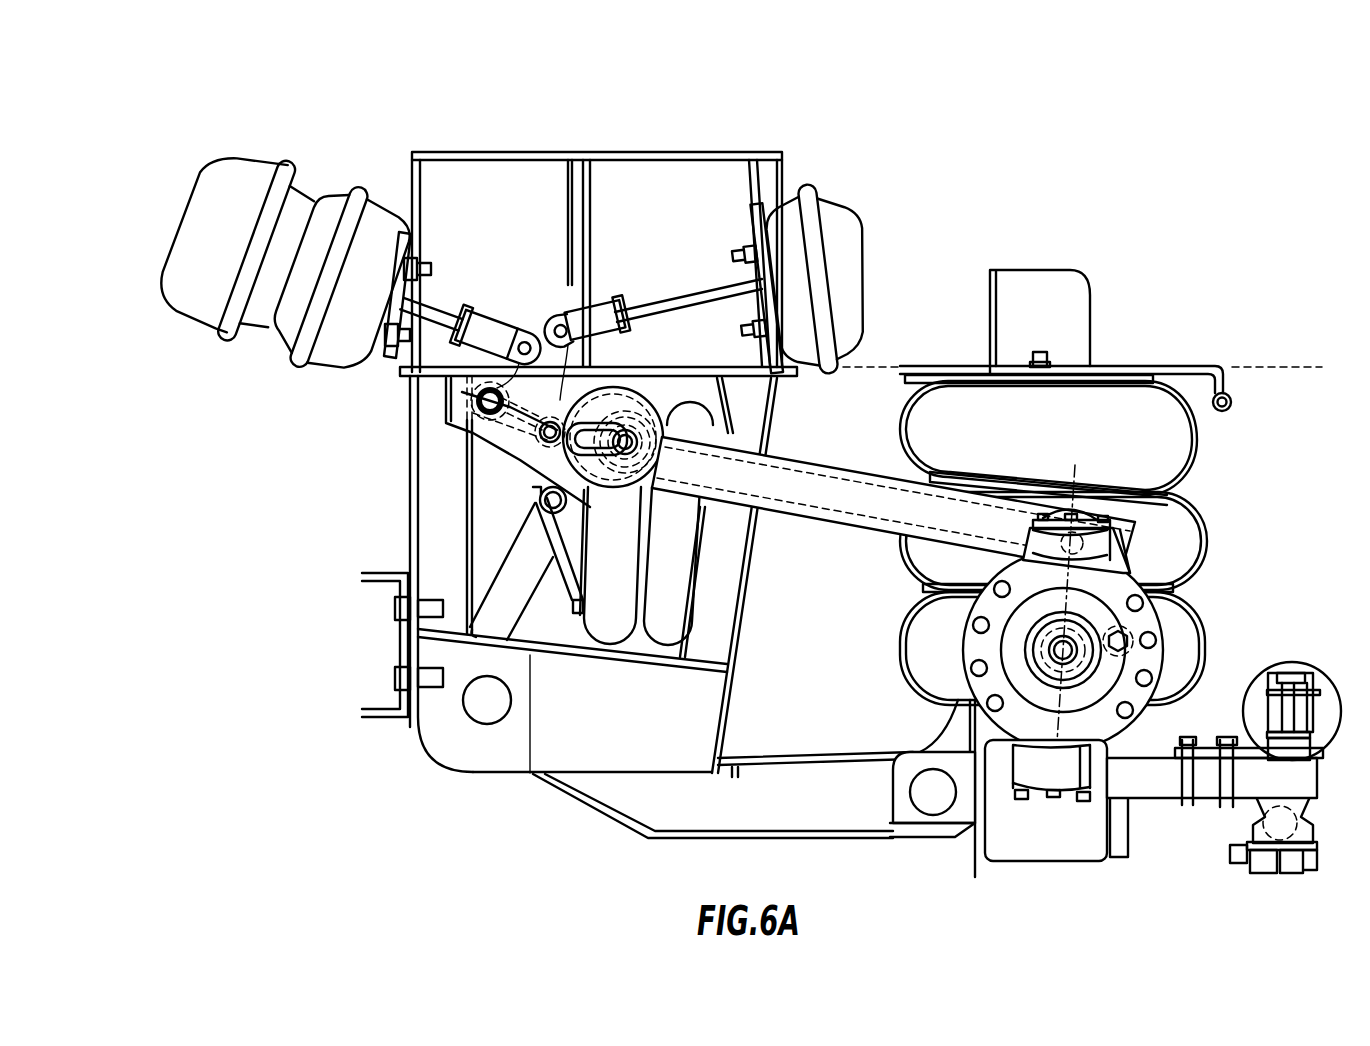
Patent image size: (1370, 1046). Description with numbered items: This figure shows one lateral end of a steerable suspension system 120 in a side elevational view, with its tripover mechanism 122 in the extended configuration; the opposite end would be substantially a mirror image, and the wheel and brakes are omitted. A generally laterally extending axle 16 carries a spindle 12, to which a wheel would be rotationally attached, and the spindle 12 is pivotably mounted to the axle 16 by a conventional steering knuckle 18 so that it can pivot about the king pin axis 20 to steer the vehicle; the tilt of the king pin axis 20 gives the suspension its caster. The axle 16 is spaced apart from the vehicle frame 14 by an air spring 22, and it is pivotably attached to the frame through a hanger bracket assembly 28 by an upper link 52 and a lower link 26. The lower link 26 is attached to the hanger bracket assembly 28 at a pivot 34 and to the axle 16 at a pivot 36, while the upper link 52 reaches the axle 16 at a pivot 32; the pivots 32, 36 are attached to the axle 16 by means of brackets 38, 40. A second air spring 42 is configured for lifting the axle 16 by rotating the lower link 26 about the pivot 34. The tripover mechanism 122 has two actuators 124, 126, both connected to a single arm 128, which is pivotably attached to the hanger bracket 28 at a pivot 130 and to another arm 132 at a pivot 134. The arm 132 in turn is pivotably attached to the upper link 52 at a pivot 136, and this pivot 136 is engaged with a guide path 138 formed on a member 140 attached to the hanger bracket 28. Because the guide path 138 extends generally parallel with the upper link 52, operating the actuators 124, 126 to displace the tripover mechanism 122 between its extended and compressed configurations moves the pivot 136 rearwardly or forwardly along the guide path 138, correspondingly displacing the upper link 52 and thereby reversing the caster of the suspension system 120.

The spindle 12 is at (1127, 649).
The vehicle frame 14 is at (1277, 373).
The axle 16 is at (1113, 829).
The steering knuckle 18 is at (1125, 775).
The king pin axis 20 is at (1047, 823).
The air spring 22 is at (1195, 460).
The lower link 26 is at (763, 758).
The hanger bracket assembly 28 is at (407, 556).
The pivot 32 is at (1110, 537).
The pivot 34 is at (468, 714).
The pivot 36 is at (955, 840).
The bracket 38 is at (1118, 566).
The bracket 40 is at (890, 806).
The air spring 42 is at (713, 405).
The upper link 52 is at (816, 518).
The steerable suspension system 120 is at (1155, 208).
The tripover mechanism 122 is at (507, 275).
The actuator 124 is at (228, 158).
The actuator 126 is at (840, 196).
The arm 128 is at (470, 437).
The pivot 130 is at (478, 406).
The arm 132 is at (594, 468).
The pivot 134 is at (531, 447).
The pivot 136 is at (632, 447).
The guide path 138 is at (602, 418).
The member 140 is at (648, 395).